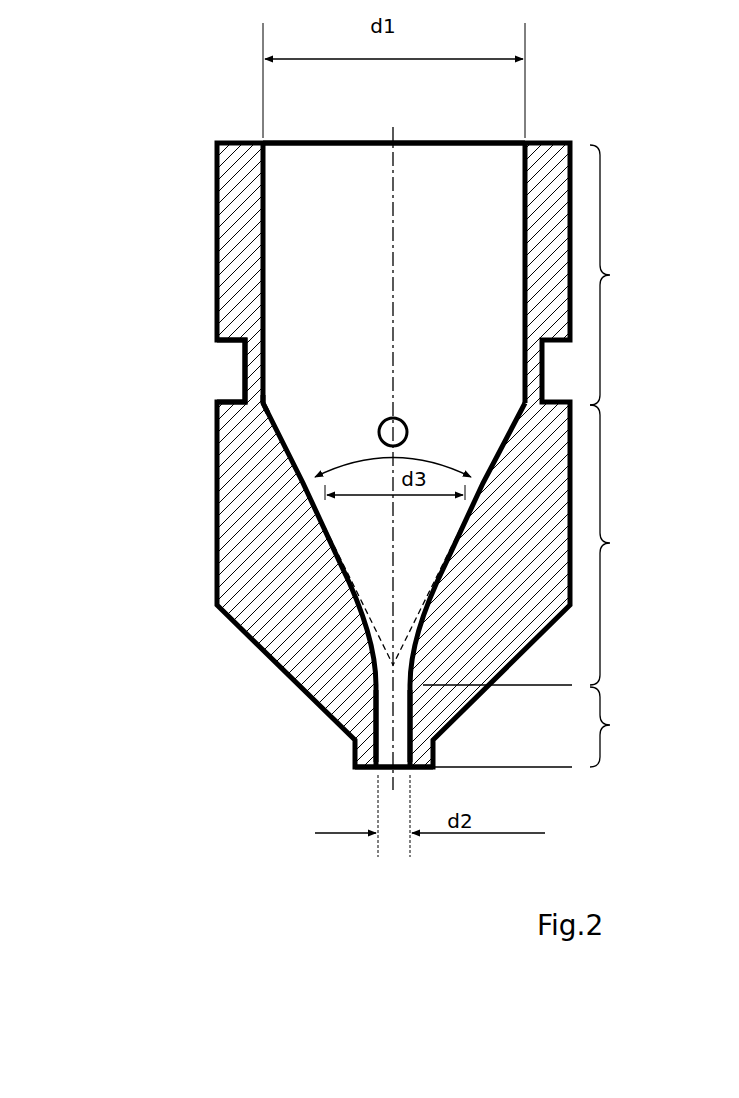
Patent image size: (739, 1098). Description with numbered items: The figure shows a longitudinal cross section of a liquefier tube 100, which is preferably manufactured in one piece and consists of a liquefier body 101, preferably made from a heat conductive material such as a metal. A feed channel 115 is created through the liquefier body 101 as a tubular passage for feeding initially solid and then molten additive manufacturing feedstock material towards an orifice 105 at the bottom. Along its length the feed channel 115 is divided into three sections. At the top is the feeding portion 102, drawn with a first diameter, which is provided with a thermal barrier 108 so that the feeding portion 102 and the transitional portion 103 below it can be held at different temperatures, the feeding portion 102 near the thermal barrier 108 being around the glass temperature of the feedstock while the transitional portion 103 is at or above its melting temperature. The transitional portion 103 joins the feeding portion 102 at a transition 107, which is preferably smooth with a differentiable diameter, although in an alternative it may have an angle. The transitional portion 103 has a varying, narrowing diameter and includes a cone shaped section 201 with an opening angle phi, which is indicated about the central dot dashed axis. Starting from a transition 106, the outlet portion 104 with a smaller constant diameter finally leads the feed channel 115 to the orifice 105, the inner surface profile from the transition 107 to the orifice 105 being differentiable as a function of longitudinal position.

The liquefier tube 100 is at (176, 165).
The liquefier body 101 is at (255, 542).
The feeding portion 102 is at (466, 274).
The transitional portion 103 is at (466, 544).
The outlet portion 104 is at (518, 726).
The orifice 105 is at (381, 772).
The transition 106 is at (373, 685).
The transition 107 is at (275, 400).
The thermal barrier 108 is at (241, 387).
The feed channel 115 is at (420, 138).
The cone shaped section 201 is at (285, 432).